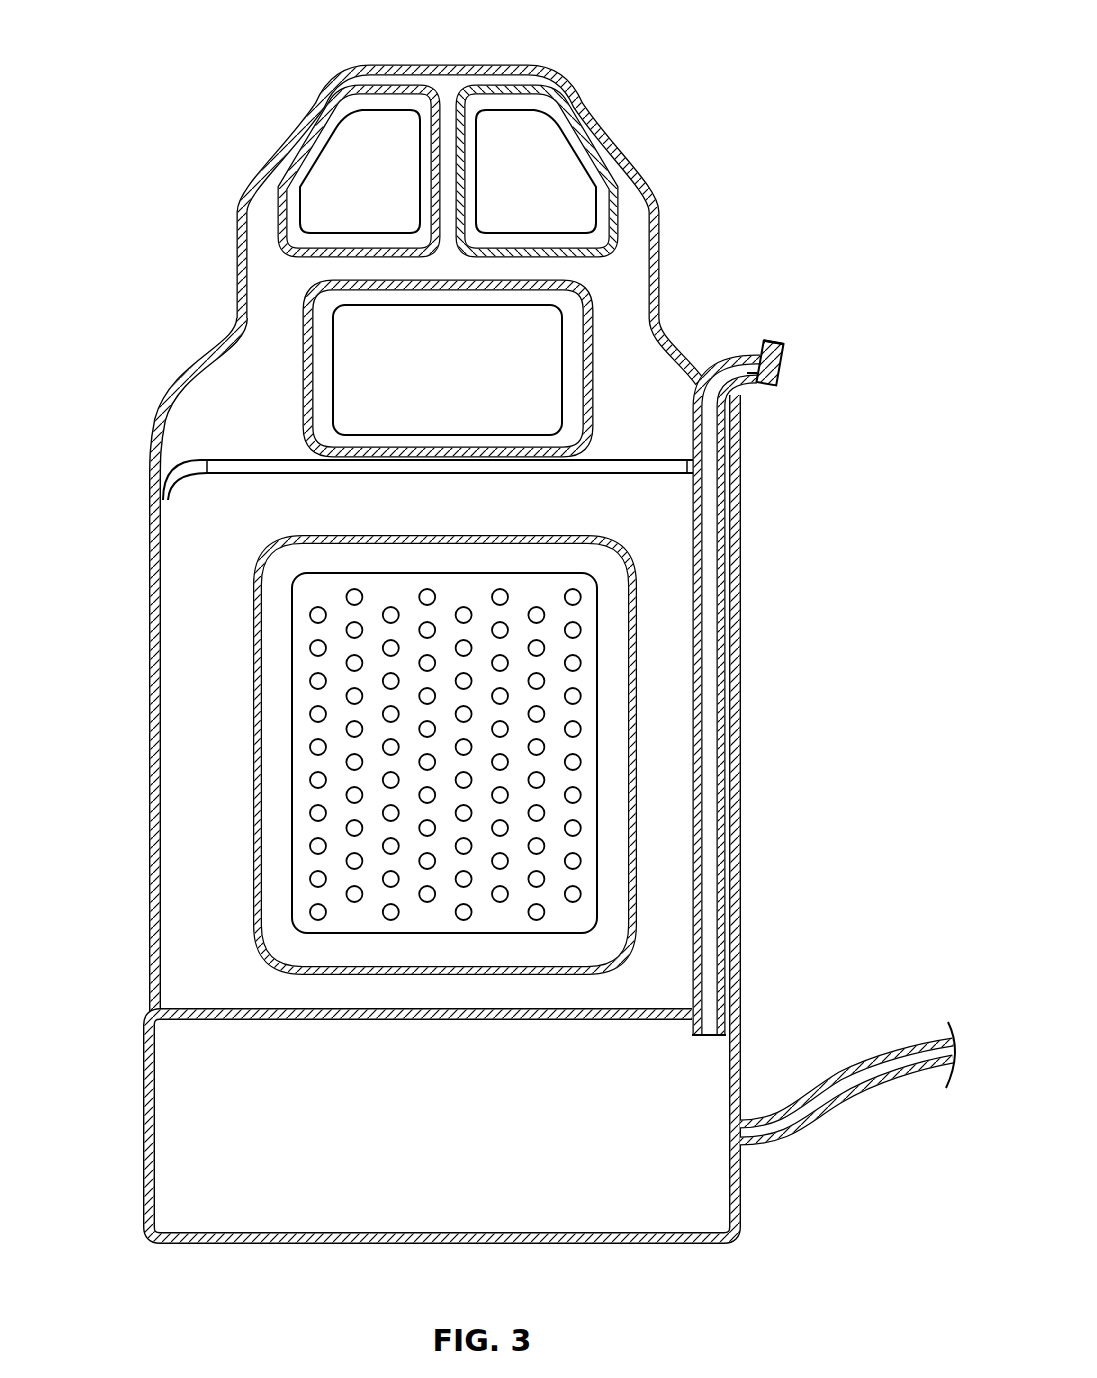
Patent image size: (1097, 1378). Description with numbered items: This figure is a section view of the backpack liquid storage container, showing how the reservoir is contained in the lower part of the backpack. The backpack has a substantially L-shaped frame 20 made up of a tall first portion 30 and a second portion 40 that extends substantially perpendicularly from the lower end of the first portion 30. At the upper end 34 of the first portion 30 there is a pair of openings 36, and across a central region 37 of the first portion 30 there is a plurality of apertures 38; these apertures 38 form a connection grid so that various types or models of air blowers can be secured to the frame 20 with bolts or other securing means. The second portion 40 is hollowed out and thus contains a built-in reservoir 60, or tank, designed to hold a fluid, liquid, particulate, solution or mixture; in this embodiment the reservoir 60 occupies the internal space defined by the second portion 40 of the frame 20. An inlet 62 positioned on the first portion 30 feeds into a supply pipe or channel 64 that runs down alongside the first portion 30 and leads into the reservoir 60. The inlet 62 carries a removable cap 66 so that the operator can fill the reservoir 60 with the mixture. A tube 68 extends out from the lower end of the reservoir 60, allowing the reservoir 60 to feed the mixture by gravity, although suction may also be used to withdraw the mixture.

The frame 20 is at (658, 327).
The first portion 30 is at (149, 580).
The upper end 34 is at (435, 72).
The openings 36 is at (350, 180).
The central region 37 is at (600, 627).
The apertures 38 is at (352, 589).
The second portion 40 is at (737, 1050).
The reservoir 60 is at (168, 1178).
The inlet 62 is at (758, 370).
The supply pipe or channel 64 is at (710, 510).
The cap 66 is at (770, 341).
The tube 68 is at (812, 1122).